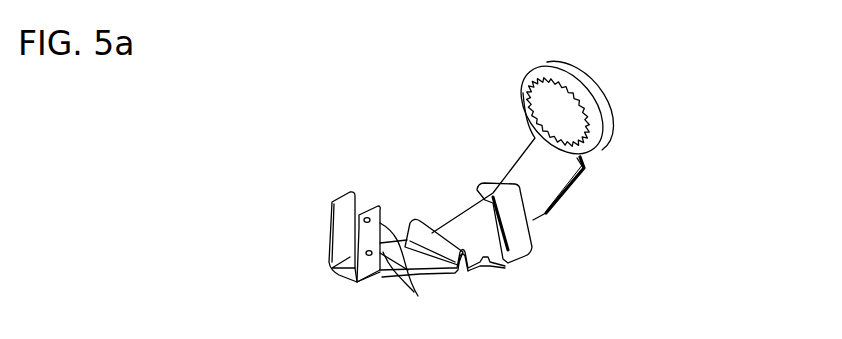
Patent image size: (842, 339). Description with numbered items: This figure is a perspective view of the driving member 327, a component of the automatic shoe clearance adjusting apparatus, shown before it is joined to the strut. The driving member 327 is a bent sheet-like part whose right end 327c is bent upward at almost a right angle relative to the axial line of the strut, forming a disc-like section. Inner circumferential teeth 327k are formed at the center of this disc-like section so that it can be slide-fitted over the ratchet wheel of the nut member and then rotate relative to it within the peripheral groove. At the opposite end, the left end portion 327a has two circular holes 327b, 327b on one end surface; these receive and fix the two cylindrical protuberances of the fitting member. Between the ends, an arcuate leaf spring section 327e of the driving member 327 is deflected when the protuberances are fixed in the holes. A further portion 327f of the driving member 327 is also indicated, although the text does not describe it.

The driving member 327 is at (457, 207).
The left end portion 327a is at (340, 273).
The circular holes 327b is at (418, 296).
The right end 327c is at (596, 148).
The arcuate leaf spring section 327e is at (540, 210).
The lug 327f is at (518, 197).
The inner circumferential teeth 327k is at (542, 94).